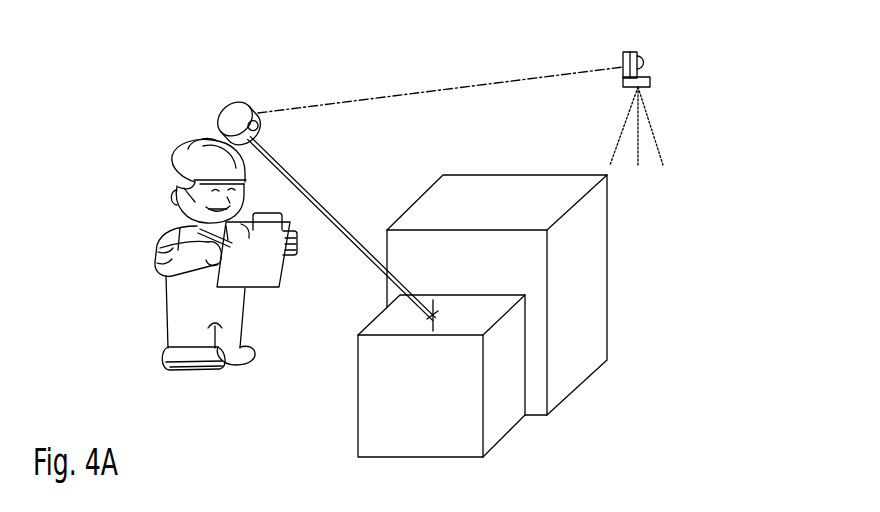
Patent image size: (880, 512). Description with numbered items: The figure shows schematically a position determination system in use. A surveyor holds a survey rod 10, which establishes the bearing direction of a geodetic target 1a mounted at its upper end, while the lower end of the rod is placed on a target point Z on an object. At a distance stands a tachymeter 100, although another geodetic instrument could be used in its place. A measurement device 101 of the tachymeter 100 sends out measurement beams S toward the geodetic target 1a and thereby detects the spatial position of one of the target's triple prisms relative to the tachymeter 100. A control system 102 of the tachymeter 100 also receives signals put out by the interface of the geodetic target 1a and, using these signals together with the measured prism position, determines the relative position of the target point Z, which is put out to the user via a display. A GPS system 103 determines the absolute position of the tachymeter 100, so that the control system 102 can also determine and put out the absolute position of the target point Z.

The geodetic target 1a is at (219, 105).
The survey rod 10 is at (316, 191).
The tachymeter 100 is at (656, 97).
The measurement device 101 is at (652, 62).
The control system 102 is at (620, 53).
The GPS system 103 is at (622, 84).
The measurement beams S is at (432, 88).
The target point Z is at (443, 318).